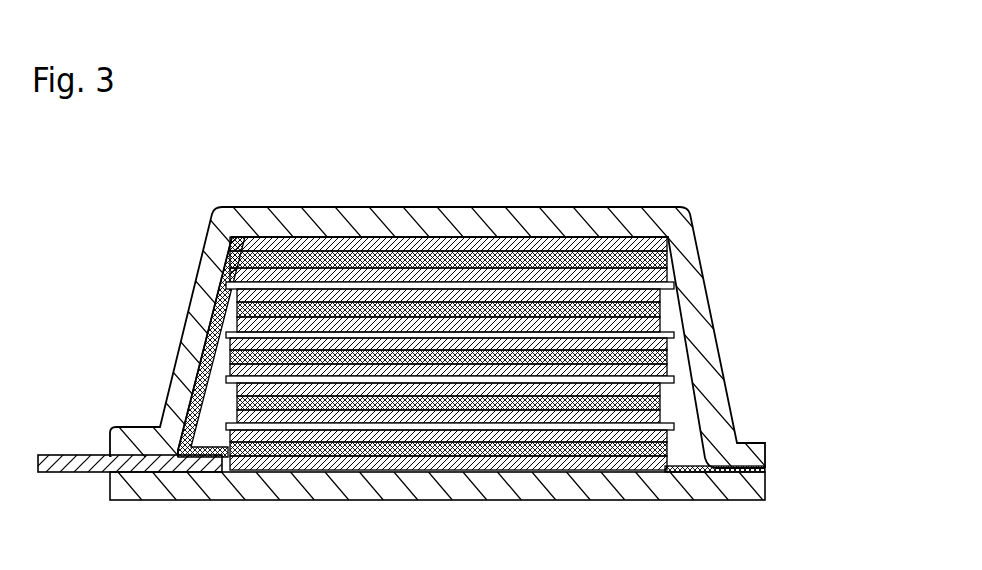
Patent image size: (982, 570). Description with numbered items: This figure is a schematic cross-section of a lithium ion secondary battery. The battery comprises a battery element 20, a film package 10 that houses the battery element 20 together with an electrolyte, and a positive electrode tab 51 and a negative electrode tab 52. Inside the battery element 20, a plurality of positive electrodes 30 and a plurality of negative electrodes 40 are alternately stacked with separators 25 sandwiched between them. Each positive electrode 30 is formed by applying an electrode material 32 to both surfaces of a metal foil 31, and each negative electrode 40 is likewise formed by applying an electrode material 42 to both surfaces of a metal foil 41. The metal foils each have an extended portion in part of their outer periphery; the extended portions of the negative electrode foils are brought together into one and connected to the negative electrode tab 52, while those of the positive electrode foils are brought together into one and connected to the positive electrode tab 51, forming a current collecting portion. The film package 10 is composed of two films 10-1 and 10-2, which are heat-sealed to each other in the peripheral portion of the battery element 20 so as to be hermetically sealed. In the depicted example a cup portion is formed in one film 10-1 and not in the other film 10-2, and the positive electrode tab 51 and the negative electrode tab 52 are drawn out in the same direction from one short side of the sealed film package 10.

The film package 10 is at (477, 473).
The film 10-1 is at (746, 435).
The film 10-2 is at (766, 500).
The battery element 20 is at (316, 457).
The separator 25 is at (652, 468).
The positive electrode 30 is at (190, 300).
The metal foil 31 is at (436, 288).
The electrode material 32 is at (480, 323).
The negative electrode 40 is at (702, 274).
The metal foil 41 is at (533, 248).
The electrode material 42 is at (590, 260).
The positive electrode tab 51 is at (130, 434).
The negative electrode tab 52 is at (73, 455).